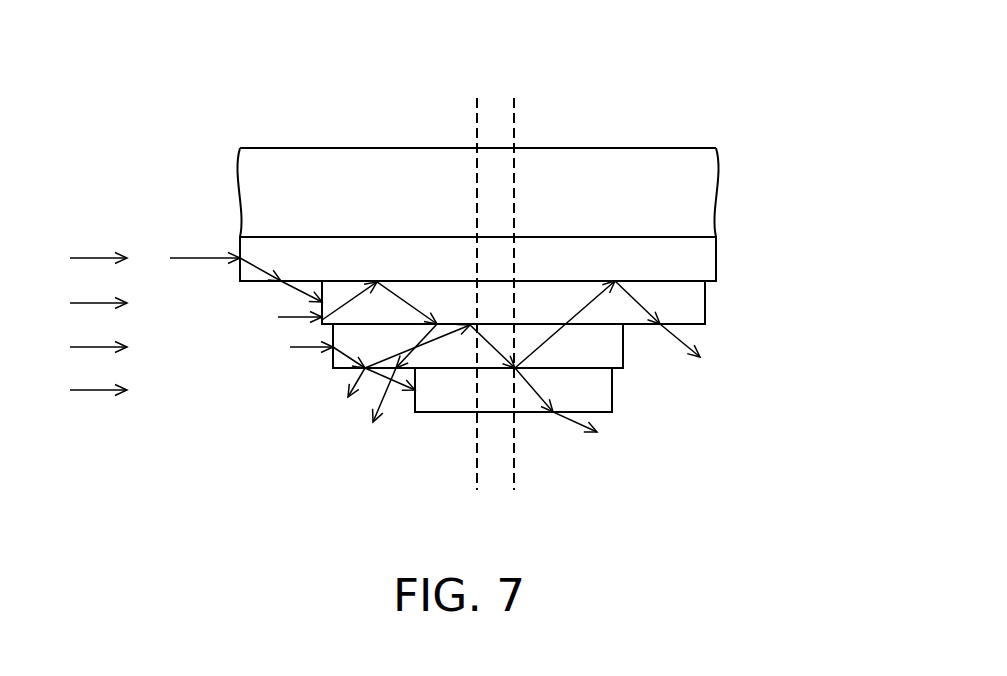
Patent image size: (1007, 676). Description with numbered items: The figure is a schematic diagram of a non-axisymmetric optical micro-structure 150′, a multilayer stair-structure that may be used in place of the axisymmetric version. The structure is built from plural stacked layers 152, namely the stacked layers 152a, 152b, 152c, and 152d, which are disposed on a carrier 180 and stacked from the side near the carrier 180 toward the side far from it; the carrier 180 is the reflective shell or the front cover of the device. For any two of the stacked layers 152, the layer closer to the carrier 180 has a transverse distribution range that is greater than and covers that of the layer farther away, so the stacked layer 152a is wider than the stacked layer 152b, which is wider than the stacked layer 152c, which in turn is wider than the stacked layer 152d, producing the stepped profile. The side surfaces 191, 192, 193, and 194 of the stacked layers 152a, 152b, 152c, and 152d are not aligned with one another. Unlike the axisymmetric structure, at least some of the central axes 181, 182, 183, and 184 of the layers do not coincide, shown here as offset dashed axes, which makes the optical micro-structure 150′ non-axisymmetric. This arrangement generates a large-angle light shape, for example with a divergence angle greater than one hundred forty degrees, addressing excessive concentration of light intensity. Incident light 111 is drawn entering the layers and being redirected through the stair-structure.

The light beam 111 is at (205, 258).
The non-axisymmetric optical micro-structure 150′ is at (571, 373).
The stacked layers 152 is at (571, 337).
The stacked layer 152a is at (697, 272).
The stacked layer 152b is at (688, 314).
The stacked layer 152c is at (600, 357).
The stacked layer 152d is at (600, 386).
The carrier 180 is at (692, 192).
The central axis 181 is at (475, 127).
The central axis 182 is at (516, 127).
The central axis 183 is at (475, 127).
The central axis 184 is at (516, 127).
The side surface 191 is at (718, 254).
The side surface 192 is at (707, 296).
The side surface 193 is at (623, 337).
The side surface 194 is at (626, 399).